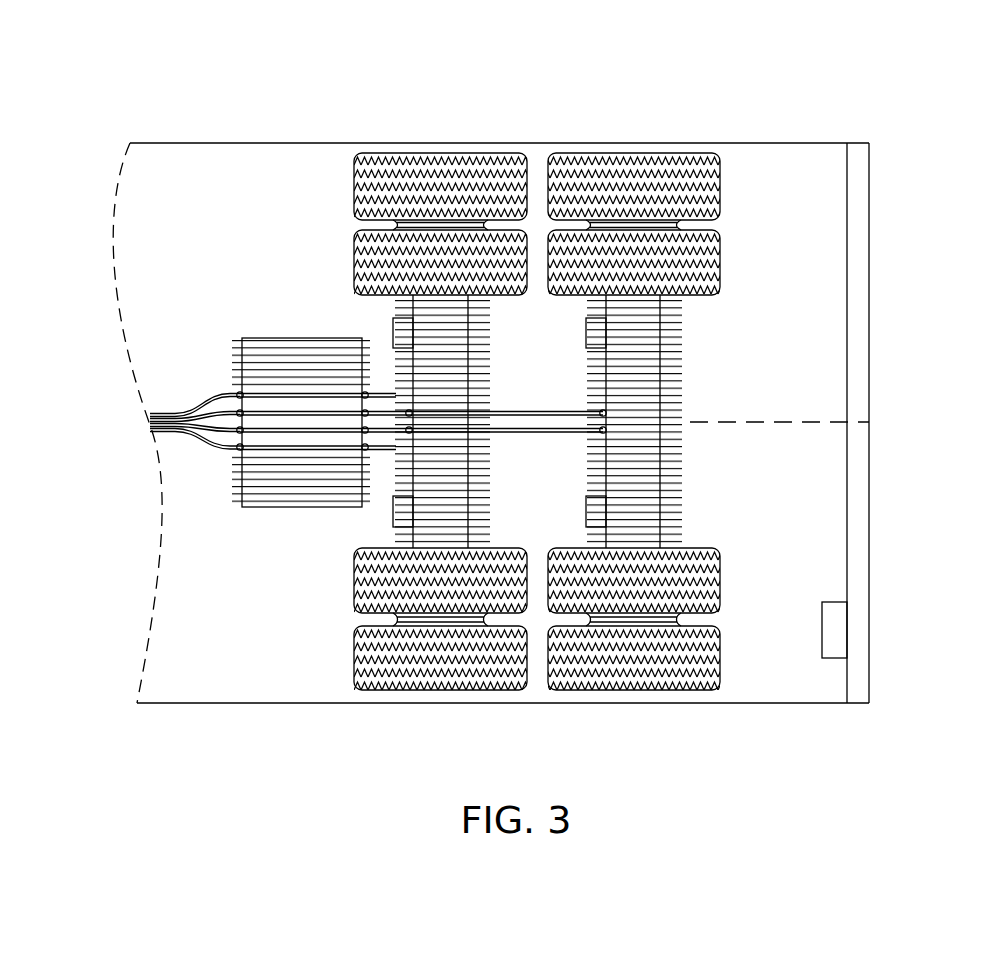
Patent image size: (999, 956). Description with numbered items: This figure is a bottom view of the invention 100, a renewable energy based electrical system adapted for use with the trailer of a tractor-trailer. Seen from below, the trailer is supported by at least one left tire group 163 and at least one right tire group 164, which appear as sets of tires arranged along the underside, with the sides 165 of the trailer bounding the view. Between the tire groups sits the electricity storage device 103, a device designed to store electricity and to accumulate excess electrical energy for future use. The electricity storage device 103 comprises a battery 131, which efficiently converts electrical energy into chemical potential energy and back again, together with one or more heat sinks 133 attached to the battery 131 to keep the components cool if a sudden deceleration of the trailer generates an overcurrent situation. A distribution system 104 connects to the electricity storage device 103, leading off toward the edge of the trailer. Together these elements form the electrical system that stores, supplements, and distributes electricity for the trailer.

The invention 100 is at (778, 112).
The electricity storage device 103 is at (286, 338).
The distribution system 104 is at (195, 448).
The battery 131 is at (293, 508).
The heat sinks 133 is at (240, 350).
The left tire group 163 is at (426, 676).
The right tire group 164 is at (447, 178).
The sides 165 is at (797, 423).